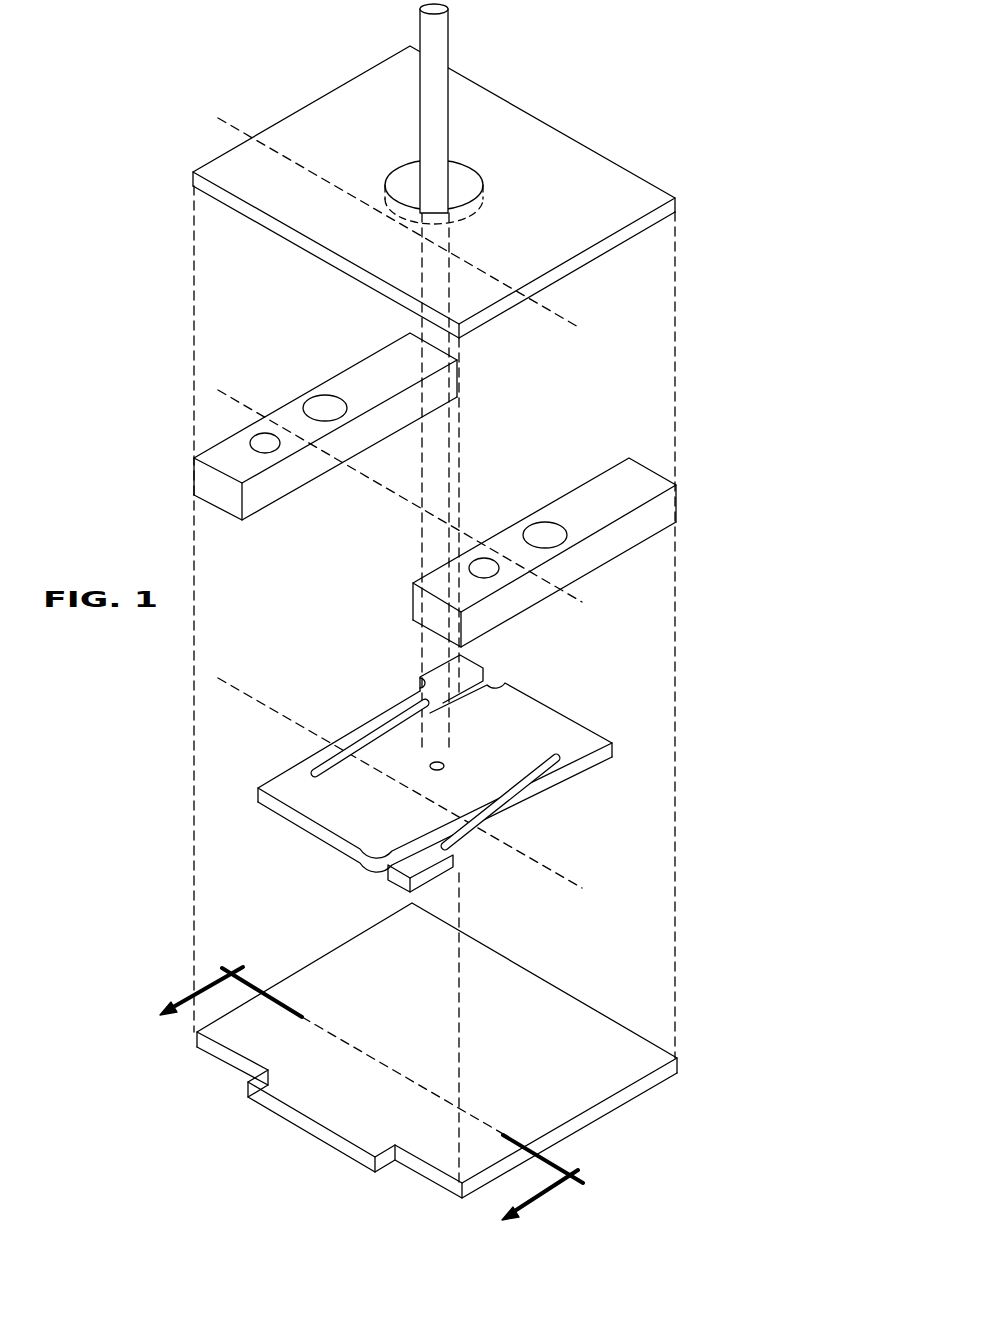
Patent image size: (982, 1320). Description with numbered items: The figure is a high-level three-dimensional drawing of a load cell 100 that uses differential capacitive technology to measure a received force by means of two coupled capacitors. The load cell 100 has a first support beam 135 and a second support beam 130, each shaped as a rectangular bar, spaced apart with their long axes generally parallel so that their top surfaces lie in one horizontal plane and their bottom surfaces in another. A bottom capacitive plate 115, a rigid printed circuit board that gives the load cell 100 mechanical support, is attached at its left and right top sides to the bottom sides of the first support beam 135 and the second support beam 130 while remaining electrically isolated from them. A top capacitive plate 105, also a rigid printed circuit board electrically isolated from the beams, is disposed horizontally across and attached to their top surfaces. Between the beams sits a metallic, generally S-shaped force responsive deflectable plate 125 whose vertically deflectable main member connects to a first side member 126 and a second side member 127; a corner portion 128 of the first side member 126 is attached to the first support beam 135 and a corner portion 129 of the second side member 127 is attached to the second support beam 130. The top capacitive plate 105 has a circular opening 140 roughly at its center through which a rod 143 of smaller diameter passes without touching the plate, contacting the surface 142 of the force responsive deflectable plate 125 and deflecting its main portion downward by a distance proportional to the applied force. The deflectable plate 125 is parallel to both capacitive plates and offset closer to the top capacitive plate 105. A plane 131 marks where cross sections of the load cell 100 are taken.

The load cell 100 is at (203, 45).
The top capacitive plate 105 is at (508, 100).
The bottom capacitive plate 115 is at (582, 1120).
The force responsive deflectable plate 125 is at (440, 766).
The first side member 126 is at (360, 735).
The second side member 127 is at (510, 800).
The corner portion 128 is at (467, 670).
The corner portion 129 is at (408, 863).
The second support beam 130 is at (667, 508).
The plane 131 is at (572, 326).
The first support beam 135 is at (388, 357).
The opening 140 is at (466, 162).
The surface 142 is at (445, 765).
The rod 143 is at (450, 42).